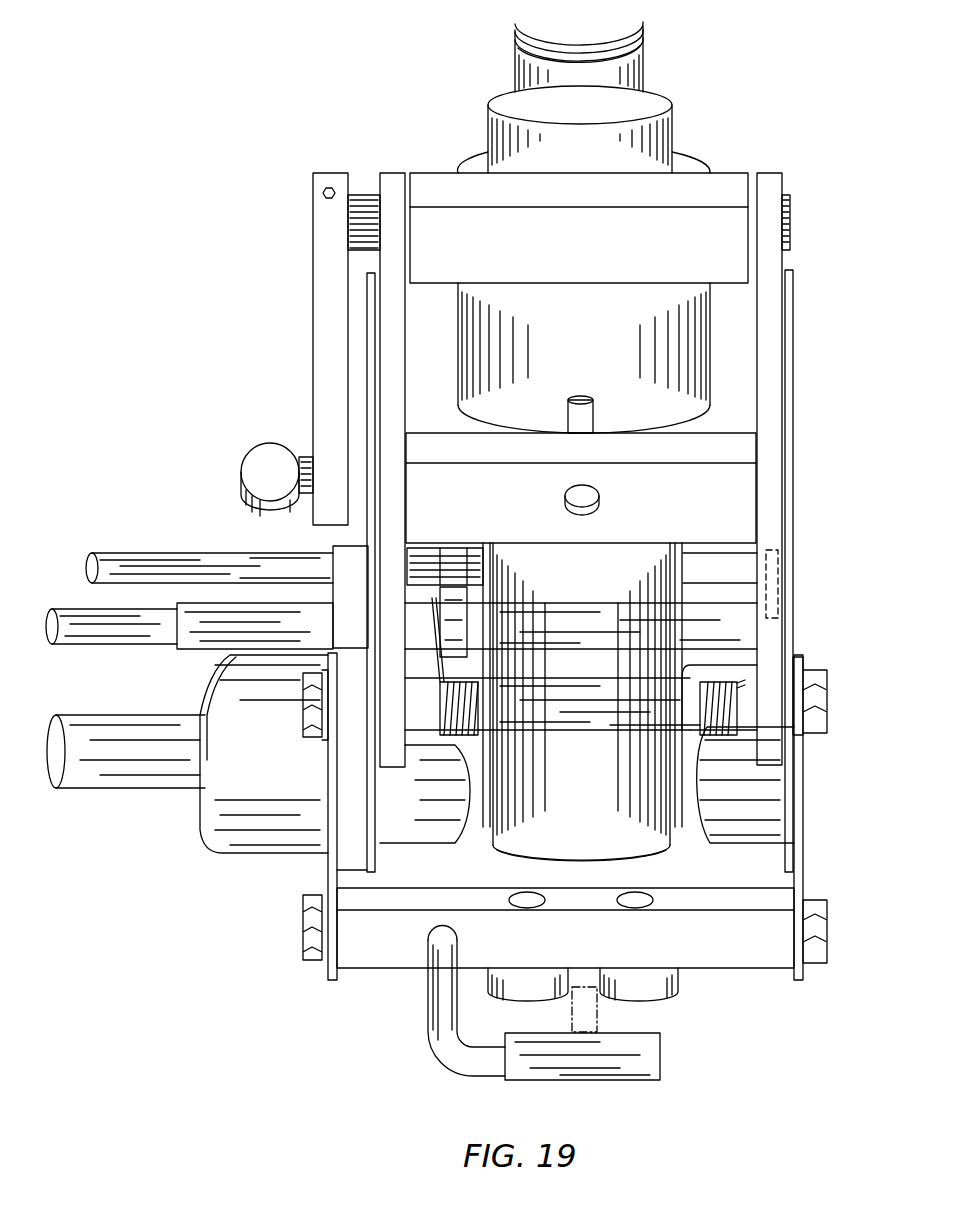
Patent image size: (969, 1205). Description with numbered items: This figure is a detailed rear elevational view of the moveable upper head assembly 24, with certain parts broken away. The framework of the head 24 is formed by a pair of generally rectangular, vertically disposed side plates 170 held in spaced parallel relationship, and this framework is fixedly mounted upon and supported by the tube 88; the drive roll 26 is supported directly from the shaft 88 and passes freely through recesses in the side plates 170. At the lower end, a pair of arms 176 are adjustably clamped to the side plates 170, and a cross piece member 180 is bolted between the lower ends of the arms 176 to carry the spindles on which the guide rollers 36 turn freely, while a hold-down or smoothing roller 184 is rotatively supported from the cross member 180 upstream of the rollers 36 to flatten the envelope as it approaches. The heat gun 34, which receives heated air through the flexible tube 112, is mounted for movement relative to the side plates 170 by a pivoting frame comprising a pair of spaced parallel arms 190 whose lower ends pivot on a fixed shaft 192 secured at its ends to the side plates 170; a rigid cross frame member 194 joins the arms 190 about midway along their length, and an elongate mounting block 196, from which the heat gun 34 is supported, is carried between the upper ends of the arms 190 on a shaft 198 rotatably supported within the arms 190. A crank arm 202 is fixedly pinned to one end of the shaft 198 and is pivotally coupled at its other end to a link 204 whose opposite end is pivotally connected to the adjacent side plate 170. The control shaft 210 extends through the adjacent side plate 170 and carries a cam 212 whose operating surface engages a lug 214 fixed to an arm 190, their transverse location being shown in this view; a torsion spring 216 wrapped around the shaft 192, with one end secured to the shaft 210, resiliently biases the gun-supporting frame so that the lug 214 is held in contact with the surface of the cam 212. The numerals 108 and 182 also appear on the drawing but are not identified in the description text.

The flexible tube 112 is at (643, 32).
The heat gun 34 is at (680, 157).
The mounting block 196 is at (638, 252).
The shaft 198 is at (790, 212).
The crank arm 202 is at (304, 277).
The upper head assembly 24 is at (797, 354).
The side plates 170 is at (360, 357).
The arms 190 is at (404, 422).
The link 204 is at (245, 448).
The cross frame member 194 is at (710, 508).
The lug 214 is at (478, 558).
The cam 212 is at (476, 591).
The shaft 210 is at (90, 645).
The torsion spring 216 is at (462, 738).
The fixed shaft 192 is at (574, 722).
The rod 108 is at (105, 790).
The tube 88 is at (237, 855).
The arms 176 is at (322, 866).
The drive roll 26 is at (708, 842).
The holes 182 is at (625, 893).
The guide rollers 36 is at (525, 998).
The cross piece member 180 is at (762, 968).
The smoothing roller 184 is at (568, 1082).